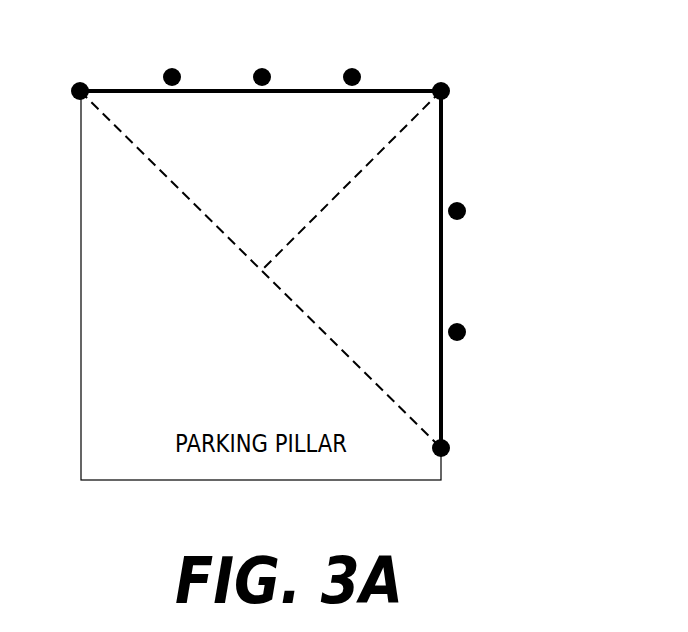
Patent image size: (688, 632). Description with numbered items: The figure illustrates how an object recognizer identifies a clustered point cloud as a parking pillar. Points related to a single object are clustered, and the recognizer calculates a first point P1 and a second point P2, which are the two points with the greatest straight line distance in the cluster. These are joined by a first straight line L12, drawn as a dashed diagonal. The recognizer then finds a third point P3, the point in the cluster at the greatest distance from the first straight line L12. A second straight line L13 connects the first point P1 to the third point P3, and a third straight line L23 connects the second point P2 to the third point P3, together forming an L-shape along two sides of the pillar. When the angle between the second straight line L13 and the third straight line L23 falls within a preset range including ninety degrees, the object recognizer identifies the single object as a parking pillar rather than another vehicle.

The first point P1 is at (80, 84).
The second point P2 is at (452, 450).
The third point P3 is at (443, 83).
The second straight line L13 is at (215, 90).
The third straight line L23 is at (444, 270).
The first straight line L12 is at (418, 424).